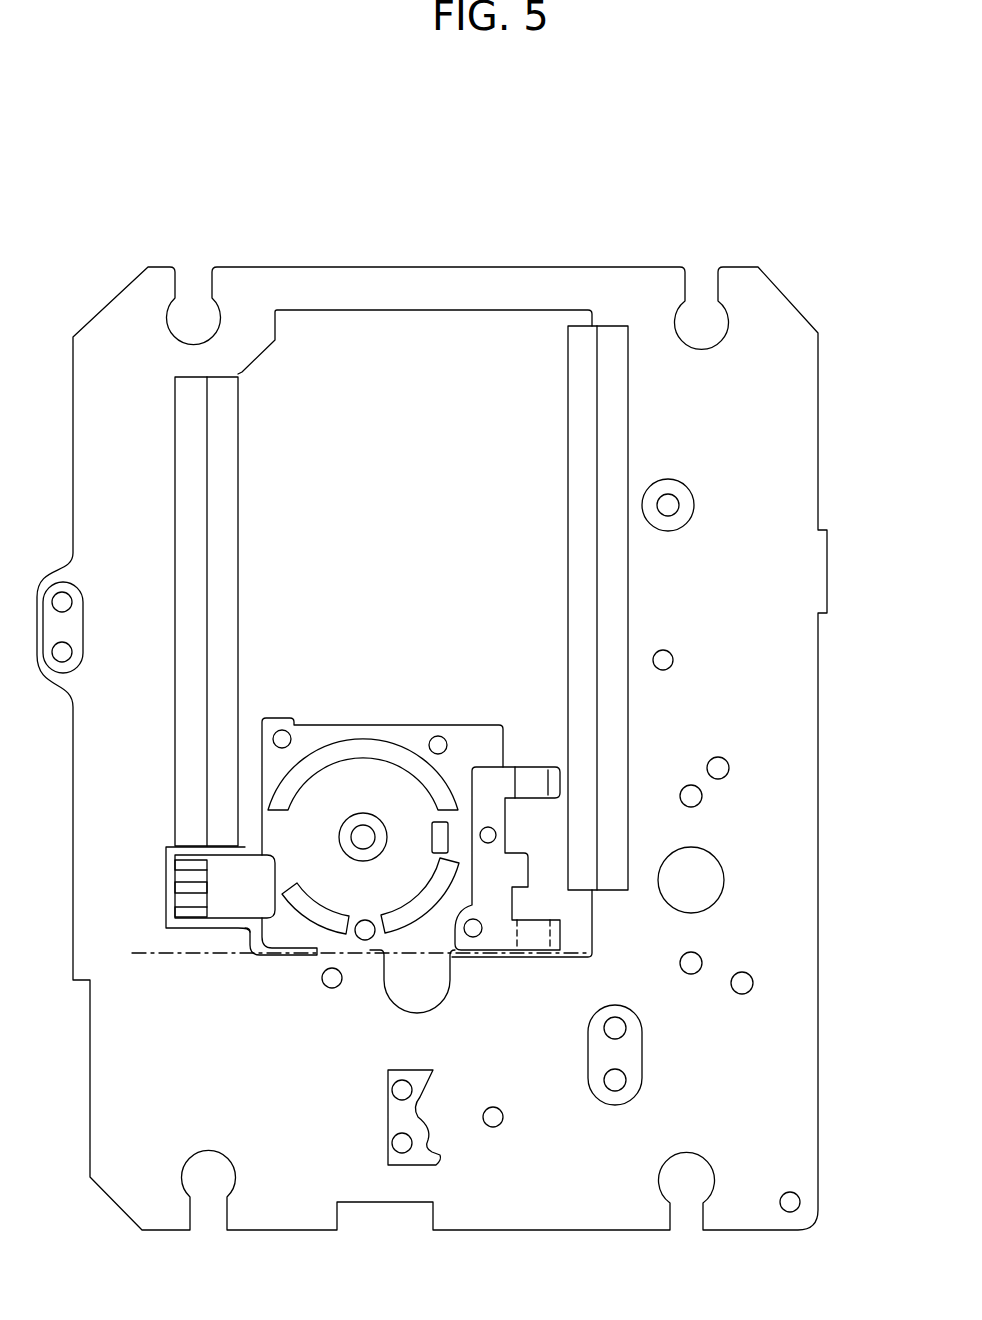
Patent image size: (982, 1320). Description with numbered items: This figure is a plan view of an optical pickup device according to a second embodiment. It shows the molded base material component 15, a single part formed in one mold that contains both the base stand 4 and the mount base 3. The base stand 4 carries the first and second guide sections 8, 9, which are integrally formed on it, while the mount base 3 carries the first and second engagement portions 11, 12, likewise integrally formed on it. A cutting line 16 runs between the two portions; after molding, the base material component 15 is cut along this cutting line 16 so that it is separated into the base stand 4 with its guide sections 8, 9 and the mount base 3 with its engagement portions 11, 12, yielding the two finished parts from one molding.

The mount base 3 is at (333, 727).
The base stand 4 is at (802, 820).
The first guide section 8 is at (616, 600).
The second guide section 9 is at (183, 605).
The first engagement portion 11 is at (502, 905).
The second engagement portion 12 is at (222, 905).
The molded base material component 15 is at (803, 287).
The cutting line 16 is at (150, 960).